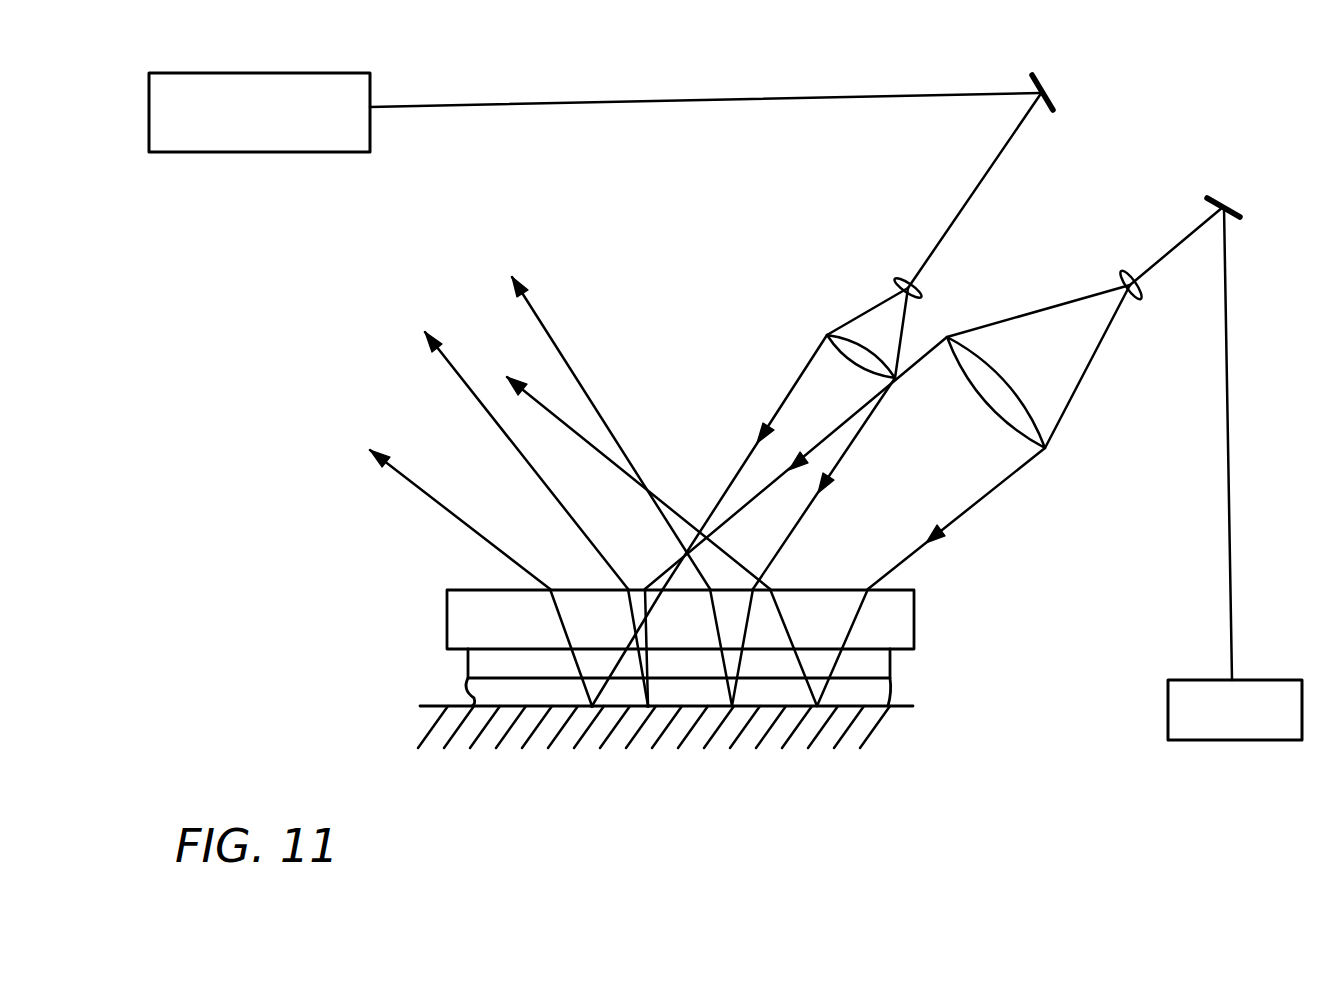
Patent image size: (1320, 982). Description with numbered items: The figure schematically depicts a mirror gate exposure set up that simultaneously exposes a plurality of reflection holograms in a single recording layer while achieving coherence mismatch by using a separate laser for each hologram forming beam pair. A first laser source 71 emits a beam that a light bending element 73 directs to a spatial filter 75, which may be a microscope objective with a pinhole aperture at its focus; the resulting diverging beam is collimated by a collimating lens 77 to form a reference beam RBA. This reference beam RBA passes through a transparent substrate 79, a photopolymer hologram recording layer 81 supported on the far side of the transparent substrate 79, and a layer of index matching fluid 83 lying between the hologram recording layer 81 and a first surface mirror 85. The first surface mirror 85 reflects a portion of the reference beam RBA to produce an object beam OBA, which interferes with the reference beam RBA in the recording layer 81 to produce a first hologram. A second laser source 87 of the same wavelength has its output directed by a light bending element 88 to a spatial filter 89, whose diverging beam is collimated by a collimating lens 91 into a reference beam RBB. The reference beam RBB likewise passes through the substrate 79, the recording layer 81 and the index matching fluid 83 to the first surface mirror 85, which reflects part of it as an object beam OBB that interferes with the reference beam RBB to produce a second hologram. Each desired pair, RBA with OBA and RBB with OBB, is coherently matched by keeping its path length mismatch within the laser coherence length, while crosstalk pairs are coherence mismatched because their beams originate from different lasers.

The first laser source 71 is at (1168, 712).
The light bending element 73 is at (1238, 214).
The spatial filter 75 is at (1147, 287).
The collimating lens 77 is at (998, 388).
The transparent substrate 79 is at (916, 612).
The photopolymer hologram recording layer 81 is at (892, 661).
The layer of index matching fluid 83 is at (878, 686).
The first surface mirror 85 is at (913, 704).
The second laser source 87 is at (255, 152).
The light bending element 88 is at (1043, 80).
The spatial filter 89 is at (906, 276).
The collimating lens 91 is at (843, 333).
The reference beam RBA is at (960, 515).
The reference beam RBB is at (768, 398).
The object beam OBA is at (586, 693).
The object beam OBB is at (646, 690).